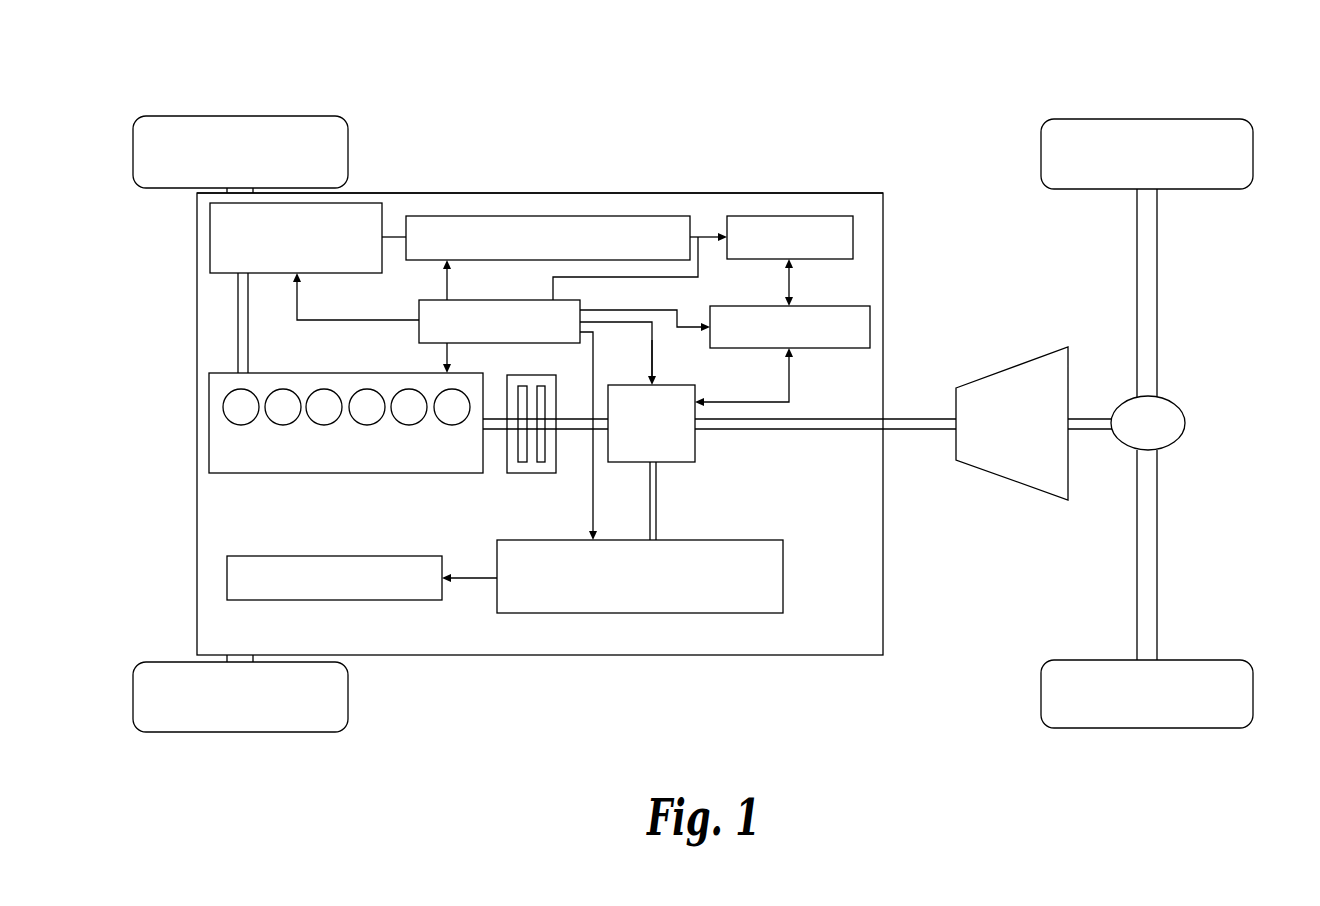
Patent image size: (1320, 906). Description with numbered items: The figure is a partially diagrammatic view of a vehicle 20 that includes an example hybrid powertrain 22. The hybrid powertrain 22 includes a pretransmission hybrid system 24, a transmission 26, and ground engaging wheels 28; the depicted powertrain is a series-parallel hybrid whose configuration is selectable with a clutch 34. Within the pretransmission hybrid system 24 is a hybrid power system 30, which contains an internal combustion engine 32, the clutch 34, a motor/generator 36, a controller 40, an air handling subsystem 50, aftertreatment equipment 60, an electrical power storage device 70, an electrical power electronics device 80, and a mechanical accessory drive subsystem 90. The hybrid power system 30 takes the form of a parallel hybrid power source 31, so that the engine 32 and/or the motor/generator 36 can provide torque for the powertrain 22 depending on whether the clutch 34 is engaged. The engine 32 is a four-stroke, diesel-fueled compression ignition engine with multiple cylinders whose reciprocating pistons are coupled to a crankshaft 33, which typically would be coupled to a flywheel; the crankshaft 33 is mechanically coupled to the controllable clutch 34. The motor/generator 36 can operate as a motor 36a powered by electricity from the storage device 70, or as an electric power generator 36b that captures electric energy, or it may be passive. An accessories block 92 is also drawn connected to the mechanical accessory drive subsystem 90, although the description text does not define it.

The vehicle 20 is at (825, 72).
The hybrid powertrain 22 is at (957, 278).
The pretransmission hybrid system 24 is at (550, 655).
The transmission 26 is at (1003, 490).
The ground engaging wheels 28 is at (217, 116).
The hybrid power system 30 is at (582, 192).
The parallel hybrid power source 31 is at (762, 500).
The internal combustion engine 32 is at (373, 473).
The crankshaft 33 is at (493, 432).
The clutch 34 is at (541, 473).
The motor/generator 36 is at (695, 448).
The motor 36a is at (667, 380).
The electric power generator 36b is at (618, 462).
The controller 40 is at (419, 337).
The air handling subsystem 50 is at (210, 237).
The aftertreatment equipment 60 is at (450, 216).
The electrical power storage device 70 is at (785, 216).
The electrical power electronics device 80 is at (846, 348).
The mechanical accessory drive subsystem 90 is at (720, 540).
The accessories 92 is at (280, 556).